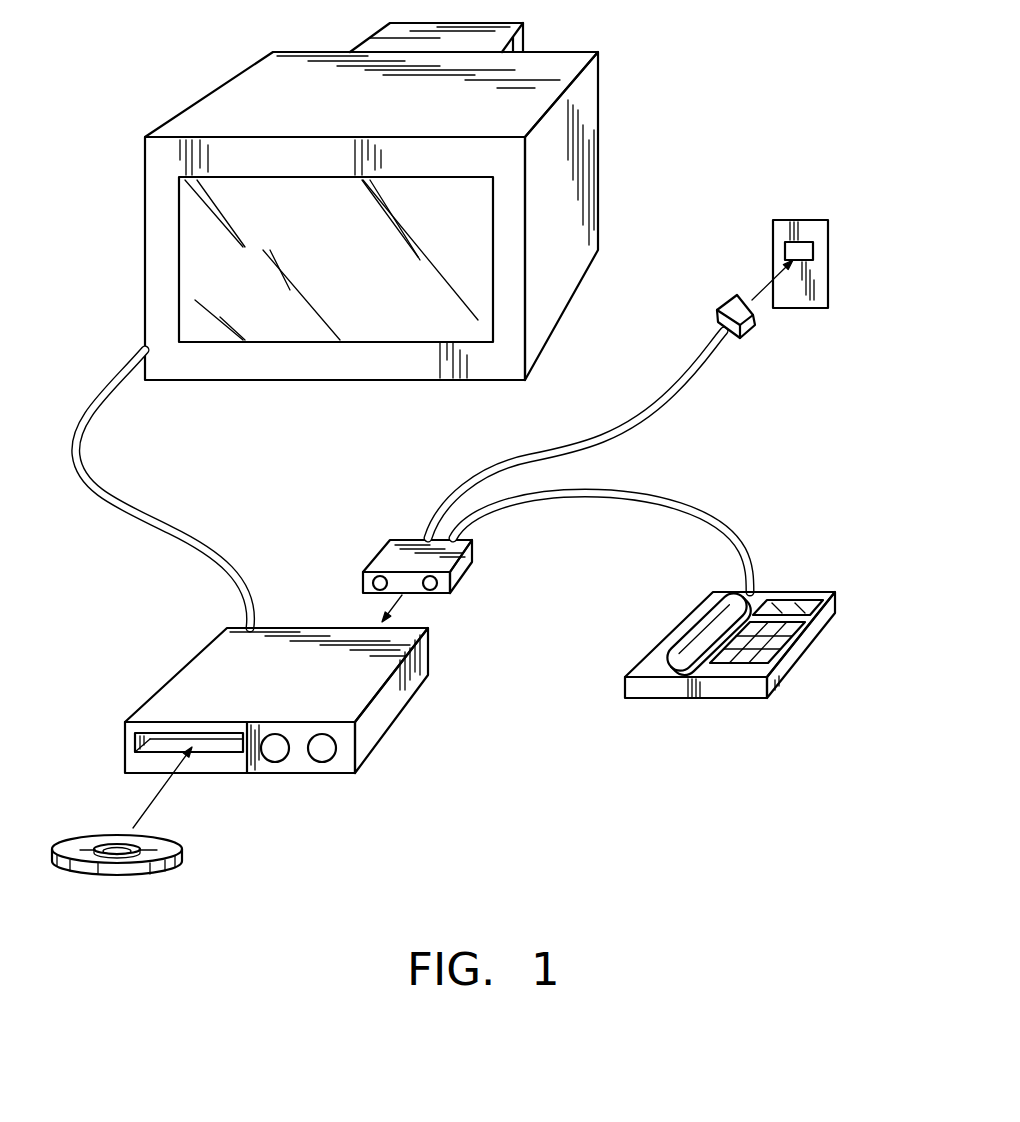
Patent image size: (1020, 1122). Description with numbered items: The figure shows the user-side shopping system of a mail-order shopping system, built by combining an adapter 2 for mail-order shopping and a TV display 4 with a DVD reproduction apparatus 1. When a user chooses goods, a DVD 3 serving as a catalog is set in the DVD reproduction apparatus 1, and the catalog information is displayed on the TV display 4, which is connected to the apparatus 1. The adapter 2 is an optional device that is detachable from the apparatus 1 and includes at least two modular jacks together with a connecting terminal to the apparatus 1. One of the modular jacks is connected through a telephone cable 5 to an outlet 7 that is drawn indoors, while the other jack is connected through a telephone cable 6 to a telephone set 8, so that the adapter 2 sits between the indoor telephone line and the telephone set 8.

The DVD reproduction apparatus 1 is at (387, 713).
The adapter 2 is at (467, 562).
The DVD 3 is at (183, 853).
The TV display 4 is at (377, 193).
The telephone cable 5 is at (680, 392).
The telephone cable 6 is at (672, 498).
The outlet 7 is at (815, 250).
The telephone set 8 is at (823, 632).